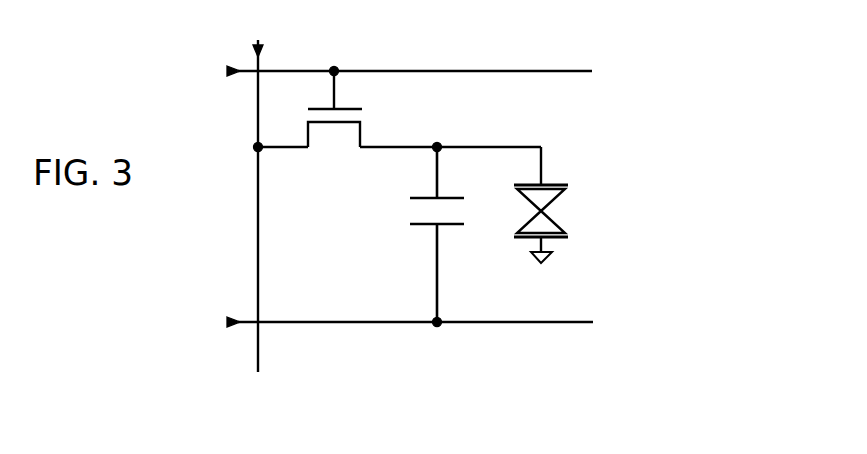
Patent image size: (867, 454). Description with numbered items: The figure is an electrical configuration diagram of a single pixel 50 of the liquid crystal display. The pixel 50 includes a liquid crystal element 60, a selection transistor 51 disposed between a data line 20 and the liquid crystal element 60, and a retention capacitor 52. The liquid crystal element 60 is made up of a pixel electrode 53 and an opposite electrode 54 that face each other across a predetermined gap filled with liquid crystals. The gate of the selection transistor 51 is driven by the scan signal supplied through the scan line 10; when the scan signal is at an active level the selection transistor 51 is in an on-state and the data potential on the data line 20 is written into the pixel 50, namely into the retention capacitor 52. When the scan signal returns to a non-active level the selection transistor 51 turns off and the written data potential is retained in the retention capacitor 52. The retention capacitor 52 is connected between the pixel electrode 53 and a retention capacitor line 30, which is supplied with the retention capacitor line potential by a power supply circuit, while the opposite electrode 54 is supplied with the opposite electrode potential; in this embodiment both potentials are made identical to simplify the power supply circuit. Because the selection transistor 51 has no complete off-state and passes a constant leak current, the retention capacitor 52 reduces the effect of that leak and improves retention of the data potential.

The scan line 10 is at (556, 68).
The data line 20 is at (257, 230).
The retention capacitor line 30 is at (548, 324).
The pixel 50 is at (697, 86).
The selection transistor 51 is at (365, 125).
The retention capacitor 52 is at (413, 212).
The pixel electrode 53 is at (560, 177).
The opposite electrode 54 is at (560, 238).
The liquid crystal element 60 is at (610, 155).